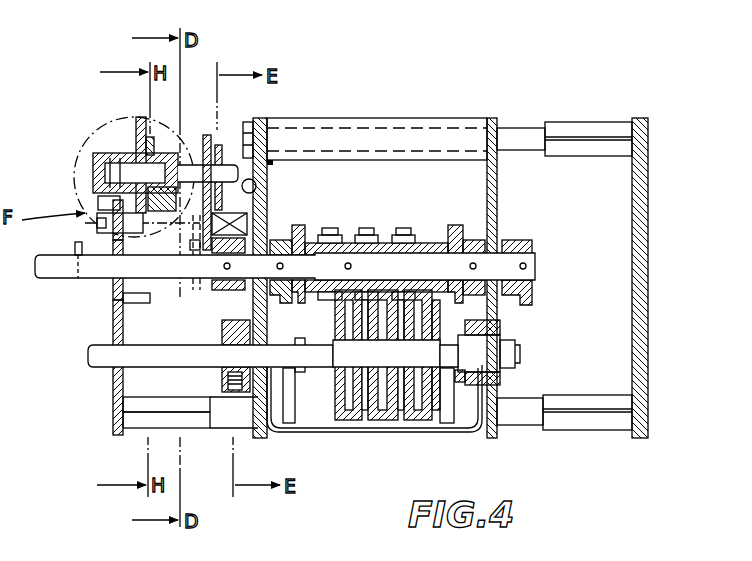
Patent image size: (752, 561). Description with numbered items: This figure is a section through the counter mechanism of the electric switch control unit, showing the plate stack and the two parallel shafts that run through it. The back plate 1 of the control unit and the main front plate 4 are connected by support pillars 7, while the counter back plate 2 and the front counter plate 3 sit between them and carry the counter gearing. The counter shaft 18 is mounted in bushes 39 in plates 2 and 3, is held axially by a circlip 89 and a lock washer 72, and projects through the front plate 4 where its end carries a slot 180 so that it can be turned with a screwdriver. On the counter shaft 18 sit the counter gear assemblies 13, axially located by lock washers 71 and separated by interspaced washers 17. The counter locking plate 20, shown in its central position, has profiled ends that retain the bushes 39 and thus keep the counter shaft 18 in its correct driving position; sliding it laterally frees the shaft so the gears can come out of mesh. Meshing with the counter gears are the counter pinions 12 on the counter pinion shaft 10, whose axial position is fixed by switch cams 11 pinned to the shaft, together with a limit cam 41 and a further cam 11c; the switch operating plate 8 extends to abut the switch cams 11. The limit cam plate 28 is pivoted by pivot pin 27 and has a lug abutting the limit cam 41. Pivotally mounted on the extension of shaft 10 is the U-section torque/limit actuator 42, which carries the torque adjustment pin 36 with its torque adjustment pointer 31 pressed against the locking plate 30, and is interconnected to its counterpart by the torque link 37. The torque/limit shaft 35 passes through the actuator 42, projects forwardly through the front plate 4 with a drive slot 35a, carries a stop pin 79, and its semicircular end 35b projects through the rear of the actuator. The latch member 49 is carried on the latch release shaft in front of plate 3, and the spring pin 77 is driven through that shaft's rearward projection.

The back plate of the control unit 1 is at (640, 130).
The counter back plate 2 is at (492, 120).
The front counter plate 3 is at (262, 116).
The main front plate 4 is at (113, 410).
The support pillars 7 is at (573, 418).
The switch operating plate 8 is at (405, 128).
The counter pinion shaft 10 is at (60, 268).
The switch cams 11 is at (300, 234).
The gear 11c is at (515, 232).
The counter pinions 12 is at (335, 240).
The counter gear assembly 13 is at (425, 428).
The interspaced washers 17 is at (350, 425).
The counter shaft 18 is at (392, 398).
The counter locking plate 20 is at (292, 438).
The pivot pin 27 is at (268, 138).
The limit cam plate 28 is at (258, 190).
The locking plate 30 is at (138, 120).
The torque adjustment pointer 31 is at (100, 165).
The torque/limit shaft 35 is at (110, 240).
The drive slot 35a is at (97, 223).
The end of the torque/limit shaft 35b is at (280, 228).
The torque adjustment pin 36 is at (92, 206).
The torque link 37 is at (206, 150).
The bushes 39 is at (485, 335).
The limit cam 41 is at (232, 298).
The torque/limit actuator 42 is at (136, 146).
The latch member 49 is at (222, 150).
The lock washers 71 is at (315, 430).
The lock washer 72 is at (222, 355).
The spring pin 77 is at (117, 322).
The pin 79 is at (190, 272).
The circlip 89 is at (512, 357).
The slot 180 is at (90, 356).